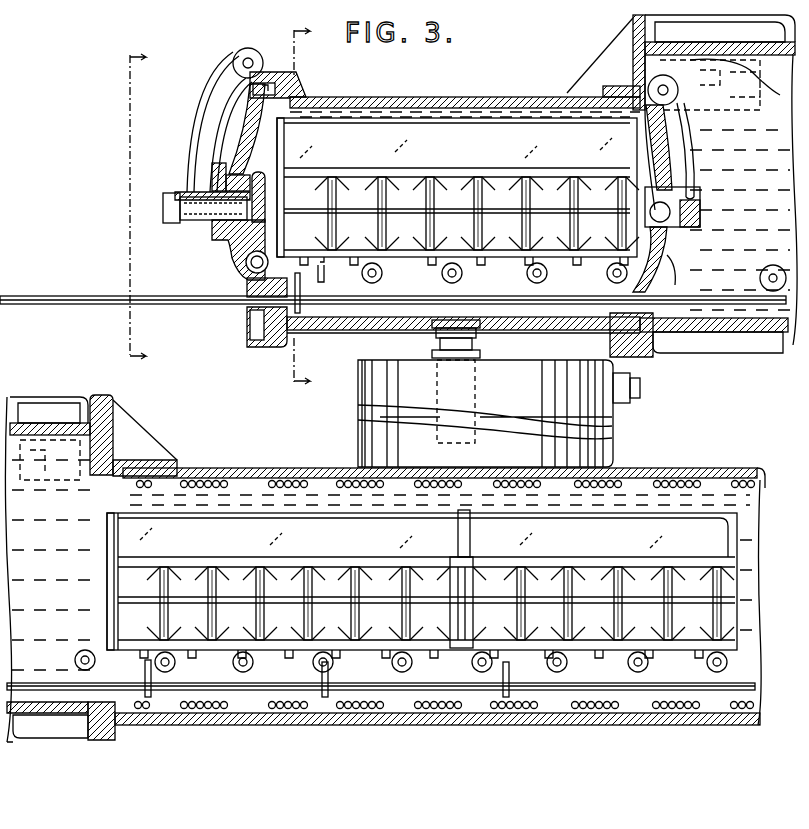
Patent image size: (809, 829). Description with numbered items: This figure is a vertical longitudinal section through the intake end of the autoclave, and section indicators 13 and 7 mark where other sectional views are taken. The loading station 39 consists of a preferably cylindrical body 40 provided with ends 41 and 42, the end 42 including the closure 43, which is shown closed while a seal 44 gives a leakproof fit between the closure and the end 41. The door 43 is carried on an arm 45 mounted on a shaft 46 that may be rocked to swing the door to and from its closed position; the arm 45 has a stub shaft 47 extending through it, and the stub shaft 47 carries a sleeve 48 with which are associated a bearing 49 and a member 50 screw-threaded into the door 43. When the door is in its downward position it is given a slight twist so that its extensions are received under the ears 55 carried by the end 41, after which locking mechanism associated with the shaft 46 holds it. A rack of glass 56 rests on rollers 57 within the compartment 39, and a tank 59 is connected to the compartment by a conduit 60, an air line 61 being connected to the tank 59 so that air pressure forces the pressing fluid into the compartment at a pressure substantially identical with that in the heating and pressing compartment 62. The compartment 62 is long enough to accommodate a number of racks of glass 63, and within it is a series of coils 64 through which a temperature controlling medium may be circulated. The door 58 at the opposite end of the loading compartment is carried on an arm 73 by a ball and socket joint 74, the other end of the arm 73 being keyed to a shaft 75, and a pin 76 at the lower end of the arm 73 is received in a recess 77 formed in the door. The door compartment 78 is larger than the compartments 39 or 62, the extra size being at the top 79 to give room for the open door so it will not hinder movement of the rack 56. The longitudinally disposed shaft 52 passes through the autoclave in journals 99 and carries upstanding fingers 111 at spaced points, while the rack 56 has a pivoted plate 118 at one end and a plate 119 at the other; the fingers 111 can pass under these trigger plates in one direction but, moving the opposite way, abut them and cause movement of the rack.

The section line 13- 13 is at (132, 210).
The section line 7- 7 is at (311, 205).
The loading station 39 is at (454, 96).
The cylindrical body 40 is at (546, 108).
The end 41 is at (292, 79).
The end 42 is at (618, 94).
The closure 43 is at (222, 130).
The seal 44 is at (247, 283).
The arm 45 is at (184, 139).
The shaft 46 is at (250, 50).
The stub shaft 47 is at (208, 212).
The sleeve 48 is at (228, 254).
The bearing 49 is at (278, 162).
The member 50 is at (212, 181).
The shaft 52 is at (118, 302).
The ears 55 is at (216, 68).
The rack of glass 56 is at (511, 251).
The rollers 57 is at (362, 275).
The door 58 is at (668, 132).
The tank 59 is at (362, 404).
The conduit 60 is at (480, 342).
The air line 61 is at (644, 386).
The heating and pressing compartment 62 is at (261, 464).
The racks of glass 63 is at (598, 644).
The coils 64 is at (214, 472).
The arm 73 is at (693, 170).
The ball and socket joint 74 is at (694, 226).
The shaft 75 is at (670, 82).
The pin 76 is at (690, 248).
The recess 77 is at (662, 268).
The door compartment 78 is at (755, 328).
The top 79 is at (786, 40).
The journals 99 is at (247, 316).
The upstanding fingers 111 is at (304, 324).
The pivoted plate 118 is at (318, 280).
The pivoted plate 119 is at (602, 272).